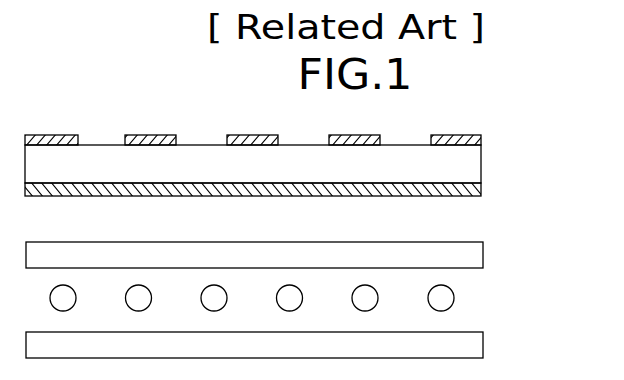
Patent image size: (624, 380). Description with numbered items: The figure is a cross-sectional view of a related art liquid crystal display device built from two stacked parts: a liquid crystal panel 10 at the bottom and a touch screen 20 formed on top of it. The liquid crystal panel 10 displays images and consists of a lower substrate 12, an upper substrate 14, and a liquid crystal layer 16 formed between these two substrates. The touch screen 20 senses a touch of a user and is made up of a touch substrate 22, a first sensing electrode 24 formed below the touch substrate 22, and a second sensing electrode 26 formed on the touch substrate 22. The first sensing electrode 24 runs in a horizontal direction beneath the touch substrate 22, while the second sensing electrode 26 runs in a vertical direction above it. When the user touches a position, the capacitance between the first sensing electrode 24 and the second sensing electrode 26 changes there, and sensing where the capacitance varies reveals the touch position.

The liquid crystal panel 10 is at (308, 300).
The lower substrate 12 is at (289, 345).
The upper substrate 14 is at (478, 253).
The liquid crystal layer 16 is at (478, 297).
The touch screen 20 is at (304, 164).
The touch substrate 22 is at (482, 163).
The first sensing electrode 24 is at (481, 188).
The second sensing electrode 26 is at (481, 139).